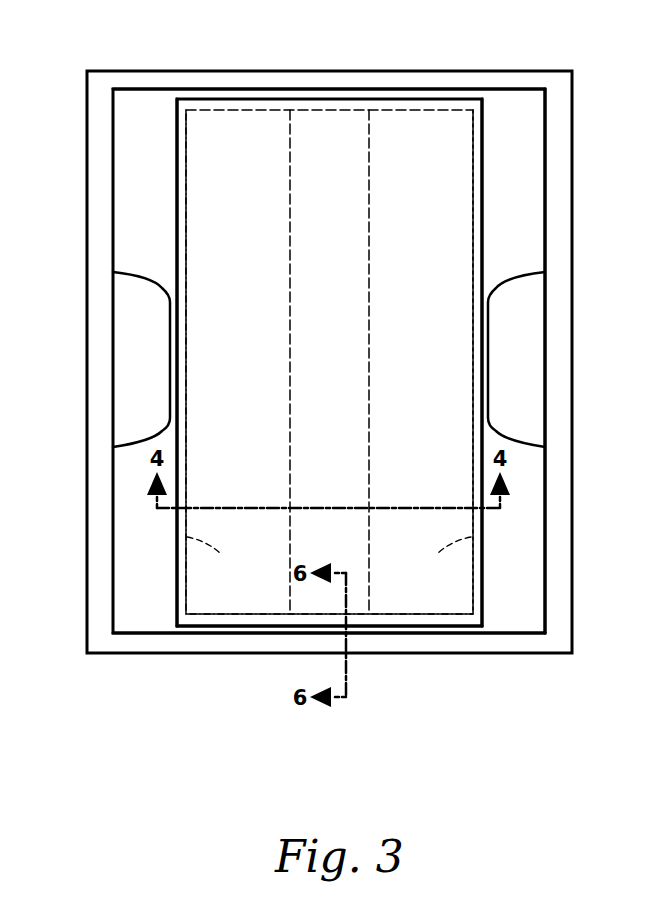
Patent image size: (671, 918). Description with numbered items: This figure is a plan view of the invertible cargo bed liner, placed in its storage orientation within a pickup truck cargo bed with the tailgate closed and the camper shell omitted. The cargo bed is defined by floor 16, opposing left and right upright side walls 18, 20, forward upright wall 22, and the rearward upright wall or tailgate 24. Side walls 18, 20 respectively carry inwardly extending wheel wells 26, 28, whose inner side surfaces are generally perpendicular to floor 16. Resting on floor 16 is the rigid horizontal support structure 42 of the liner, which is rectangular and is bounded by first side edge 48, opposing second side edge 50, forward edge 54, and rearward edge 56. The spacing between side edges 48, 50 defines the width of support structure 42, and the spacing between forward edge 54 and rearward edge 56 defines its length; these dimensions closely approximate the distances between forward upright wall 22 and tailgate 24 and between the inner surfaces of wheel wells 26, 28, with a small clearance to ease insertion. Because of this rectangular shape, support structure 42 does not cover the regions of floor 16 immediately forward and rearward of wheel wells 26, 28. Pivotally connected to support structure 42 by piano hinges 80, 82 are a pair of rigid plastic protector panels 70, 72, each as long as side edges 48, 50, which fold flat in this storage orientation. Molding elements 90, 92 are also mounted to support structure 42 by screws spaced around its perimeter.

The floor 16 is at (140, 190).
The left upright side wall 18 is at (114, 166).
The right upright side wall 20 is at (546, 137).
The forward upright wall 22 is at (138, 90).
The tailgate 24 is at (128, 632).
The wheel well 26 is at (137, 383).
The wheel well 28 is at (518, 342).
The support structure 42 is at (357, 565).
The first side edge 48 is at (177, 598).
The second side edge 50 is at (482, 605).
The forward edge 54 is at (275, 99).
The rearward edge 56 is at (243, 626).
The protector panel 70 is at (181, 535).
The protector panel 72 is at (473, 532).
The piano hinge 80 is at (180, 220).
The piano hinge 82 is at (477, 218).
The molding element 90 is at (467, 616).
The molding element 92 is at (335, 108).